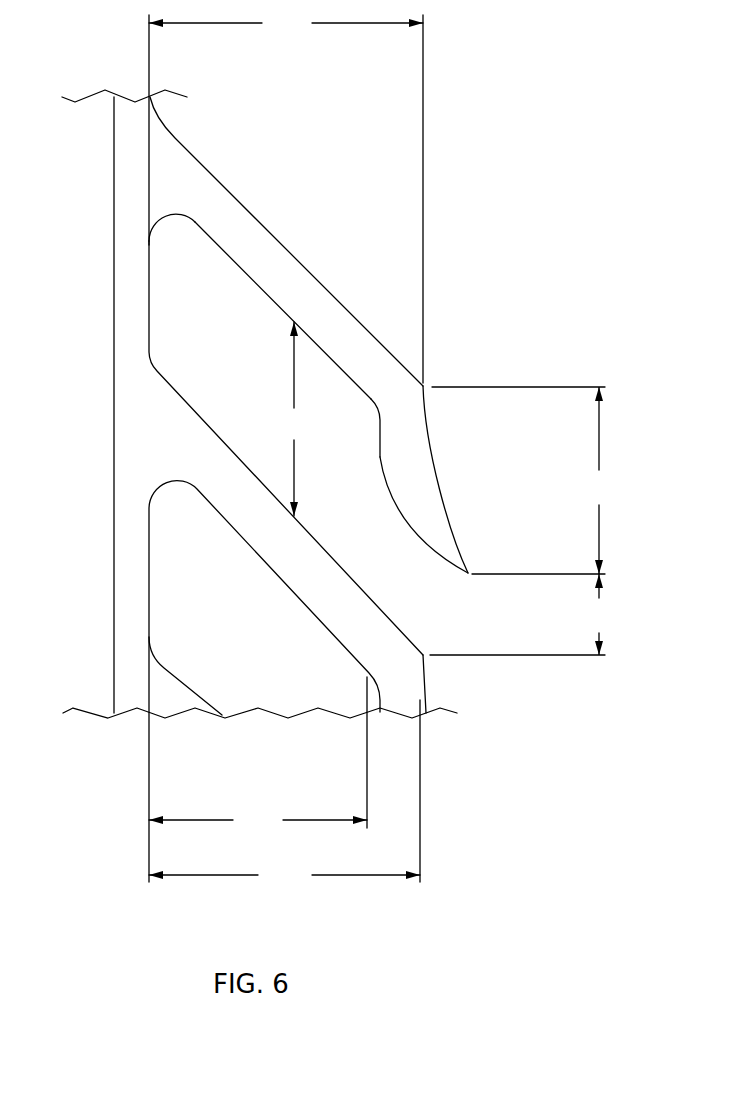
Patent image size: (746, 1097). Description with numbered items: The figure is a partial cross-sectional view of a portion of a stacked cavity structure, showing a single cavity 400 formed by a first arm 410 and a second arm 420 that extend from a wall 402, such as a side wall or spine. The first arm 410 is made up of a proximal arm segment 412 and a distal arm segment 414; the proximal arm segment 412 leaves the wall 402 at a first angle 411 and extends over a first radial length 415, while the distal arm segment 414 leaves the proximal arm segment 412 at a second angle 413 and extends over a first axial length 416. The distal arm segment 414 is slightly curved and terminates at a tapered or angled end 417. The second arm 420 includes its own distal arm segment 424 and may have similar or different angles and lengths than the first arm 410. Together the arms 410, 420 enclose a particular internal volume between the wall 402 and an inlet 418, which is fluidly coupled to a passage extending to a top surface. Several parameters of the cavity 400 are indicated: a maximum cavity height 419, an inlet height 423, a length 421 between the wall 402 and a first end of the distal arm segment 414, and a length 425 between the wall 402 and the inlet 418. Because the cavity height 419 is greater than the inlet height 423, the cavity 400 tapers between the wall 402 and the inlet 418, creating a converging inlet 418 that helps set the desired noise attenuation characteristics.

The cavity 400 is at (220, 366).
The wall 402 is at (116, 184).
The first arm 410 is at (281, 309).
The first angle 411 is at (205, 230).
The proximal arm segment 412 is at (255, 223).
The second angle 413 is at (353, 387).
The distal arm segment 414 is at (410, 503).
The first radial length 415 is at (286, 24).
The first axial length 416 is at (529, 480).
The tapered end 417 is at (458, 543).
The inlet 418 is at (425, 593).
The maximum cavity height 419 is at (295, 419).
The second arm 420 is at (237, 457).
The length 421 is at (258, 821).
The inlet height 423 is at (527, 614).
The distal arm segment 424 is at (423, 677).
The length 425 is at (284, 876).